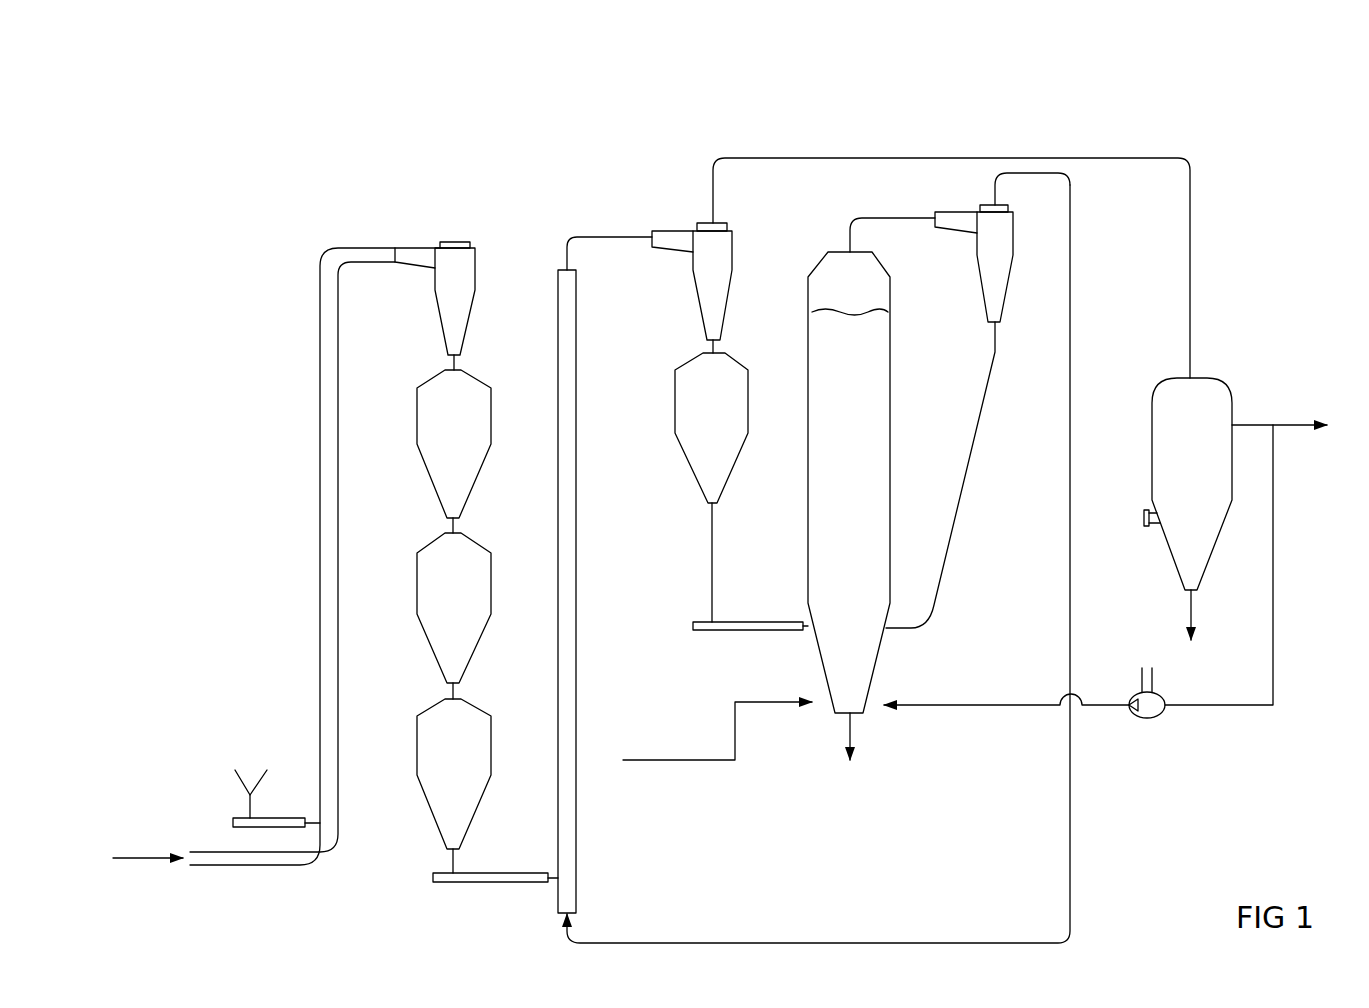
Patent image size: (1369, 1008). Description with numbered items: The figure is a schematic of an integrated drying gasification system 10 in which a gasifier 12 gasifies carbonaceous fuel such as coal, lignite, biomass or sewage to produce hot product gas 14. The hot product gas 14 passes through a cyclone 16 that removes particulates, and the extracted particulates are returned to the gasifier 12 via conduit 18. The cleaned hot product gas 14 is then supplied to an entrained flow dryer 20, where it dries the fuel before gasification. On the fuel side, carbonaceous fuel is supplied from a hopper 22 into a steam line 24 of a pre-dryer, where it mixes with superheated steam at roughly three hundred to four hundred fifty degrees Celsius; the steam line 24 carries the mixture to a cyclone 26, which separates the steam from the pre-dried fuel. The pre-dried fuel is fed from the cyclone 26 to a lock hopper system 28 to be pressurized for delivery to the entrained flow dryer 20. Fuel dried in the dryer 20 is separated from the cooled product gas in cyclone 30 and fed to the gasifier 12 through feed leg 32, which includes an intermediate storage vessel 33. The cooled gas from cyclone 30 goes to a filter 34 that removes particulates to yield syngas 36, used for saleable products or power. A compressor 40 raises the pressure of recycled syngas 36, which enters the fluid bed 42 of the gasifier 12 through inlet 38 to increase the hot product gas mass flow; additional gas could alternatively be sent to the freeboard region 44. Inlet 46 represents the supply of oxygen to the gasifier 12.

The integrated drying gasification system 10 is at (1208, 130).
The gasifier 12 is at (886, 506).
The hot product gas 14 is at (853, 222).
The cyclone 16 is at (1000, 295).
The conduit 18 is at (962, 510).
The entrained flow dryer 20 is at (572, 802).
The hopper 22 is at (236, 783).
The steam line 24 is at (318, 510).
The cyclone 26 is at (447, 258).
The lock hopper system 28 is at (383, 882).
The cyclone 30 is at (703, 235).
The feed leg 32 is at (708, 602).
The intermediate storage vessel 33 is at (729, 424).
The filter 34 is at (1173, 456).
The syngas 36 is at (1247, 422).
The inlet 38 is at (917, 705).
The compressor 40 is at (1140, 723).
The fluid bed 42 is at (828, 513).
The freeboard region 44 is at (828, 303).
The inlet 46 is at (775, 708).